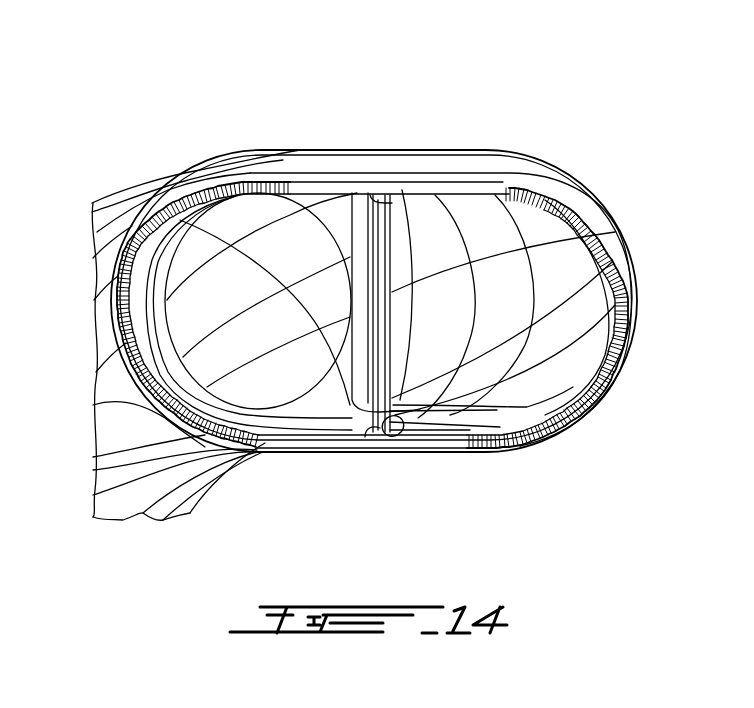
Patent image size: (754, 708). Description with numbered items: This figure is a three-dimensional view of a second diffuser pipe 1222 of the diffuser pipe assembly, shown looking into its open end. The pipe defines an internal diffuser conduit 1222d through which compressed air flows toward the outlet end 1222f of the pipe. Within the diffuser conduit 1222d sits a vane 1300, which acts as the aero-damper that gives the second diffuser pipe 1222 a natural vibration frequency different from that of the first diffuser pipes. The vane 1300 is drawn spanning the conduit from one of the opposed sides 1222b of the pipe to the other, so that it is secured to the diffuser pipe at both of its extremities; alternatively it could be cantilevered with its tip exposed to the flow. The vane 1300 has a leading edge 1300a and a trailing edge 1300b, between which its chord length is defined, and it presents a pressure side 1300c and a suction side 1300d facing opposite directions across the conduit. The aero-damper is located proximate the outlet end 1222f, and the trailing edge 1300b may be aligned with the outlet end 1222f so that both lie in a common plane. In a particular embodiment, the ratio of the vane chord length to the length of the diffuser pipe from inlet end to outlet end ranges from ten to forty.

The second diffuser pipe 1222 is at (550, 148).
The opposed sides 1222b is at (417, 153).
The diffuser conduit 1222d is at (570, 291).
The outlet end 1222f is at (600, 201).
The vane 1300 is at (398, 334).
The leading edge 1300a is at (345, 238).
The trailing edge 1300b is at (373, 373).
The pressure side 1300c is at (348, 241).
The suction side 1300d is at (397, 239).